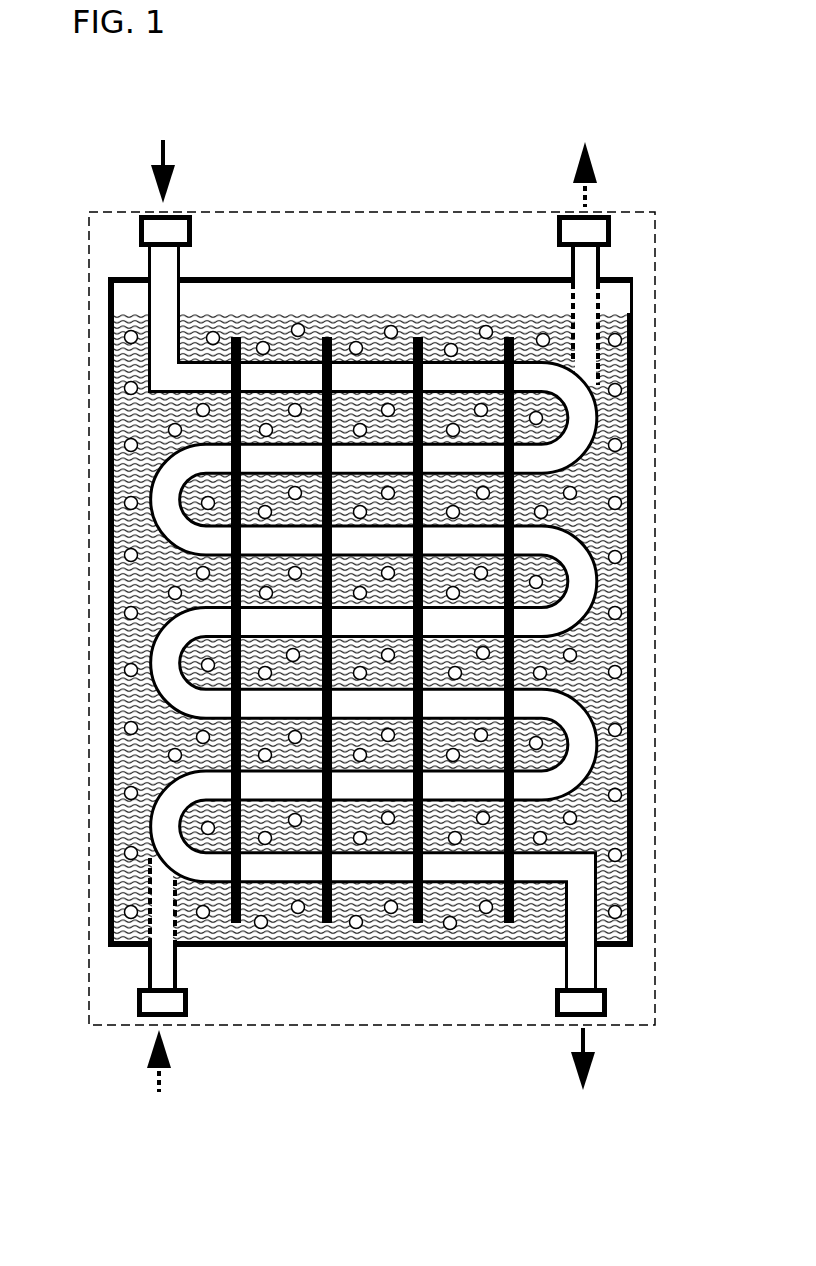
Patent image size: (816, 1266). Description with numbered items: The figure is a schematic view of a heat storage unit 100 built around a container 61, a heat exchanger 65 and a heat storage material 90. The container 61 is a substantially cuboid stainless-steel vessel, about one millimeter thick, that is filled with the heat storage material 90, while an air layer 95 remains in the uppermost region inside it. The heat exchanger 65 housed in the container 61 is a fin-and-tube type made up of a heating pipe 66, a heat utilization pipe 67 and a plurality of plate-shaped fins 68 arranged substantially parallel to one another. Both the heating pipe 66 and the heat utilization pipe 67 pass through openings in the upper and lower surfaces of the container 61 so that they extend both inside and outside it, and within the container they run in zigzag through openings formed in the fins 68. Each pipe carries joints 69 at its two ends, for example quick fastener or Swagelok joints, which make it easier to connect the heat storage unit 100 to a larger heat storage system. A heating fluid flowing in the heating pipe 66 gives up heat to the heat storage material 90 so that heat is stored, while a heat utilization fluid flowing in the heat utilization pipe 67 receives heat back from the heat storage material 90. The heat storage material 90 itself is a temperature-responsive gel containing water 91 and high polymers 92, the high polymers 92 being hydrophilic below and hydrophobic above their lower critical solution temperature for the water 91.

The heat storage unit 100 is at (659, 152).
The container 61 is at (634, 520).
The heat exchanger 65 is at (270, 182).
The heating pipe 66 is at (180, 295).
The heat utilization pipe 67 is at (570, 297).
The fins 68 is at (418, 337).
The joints 69 is at (138, 227).
The heat storage material 90 is at (432, 627).
The water 91 is at (708, 382).
The high polymers 92 is at (634, 388).
The air layer 95 is at (617, 301).